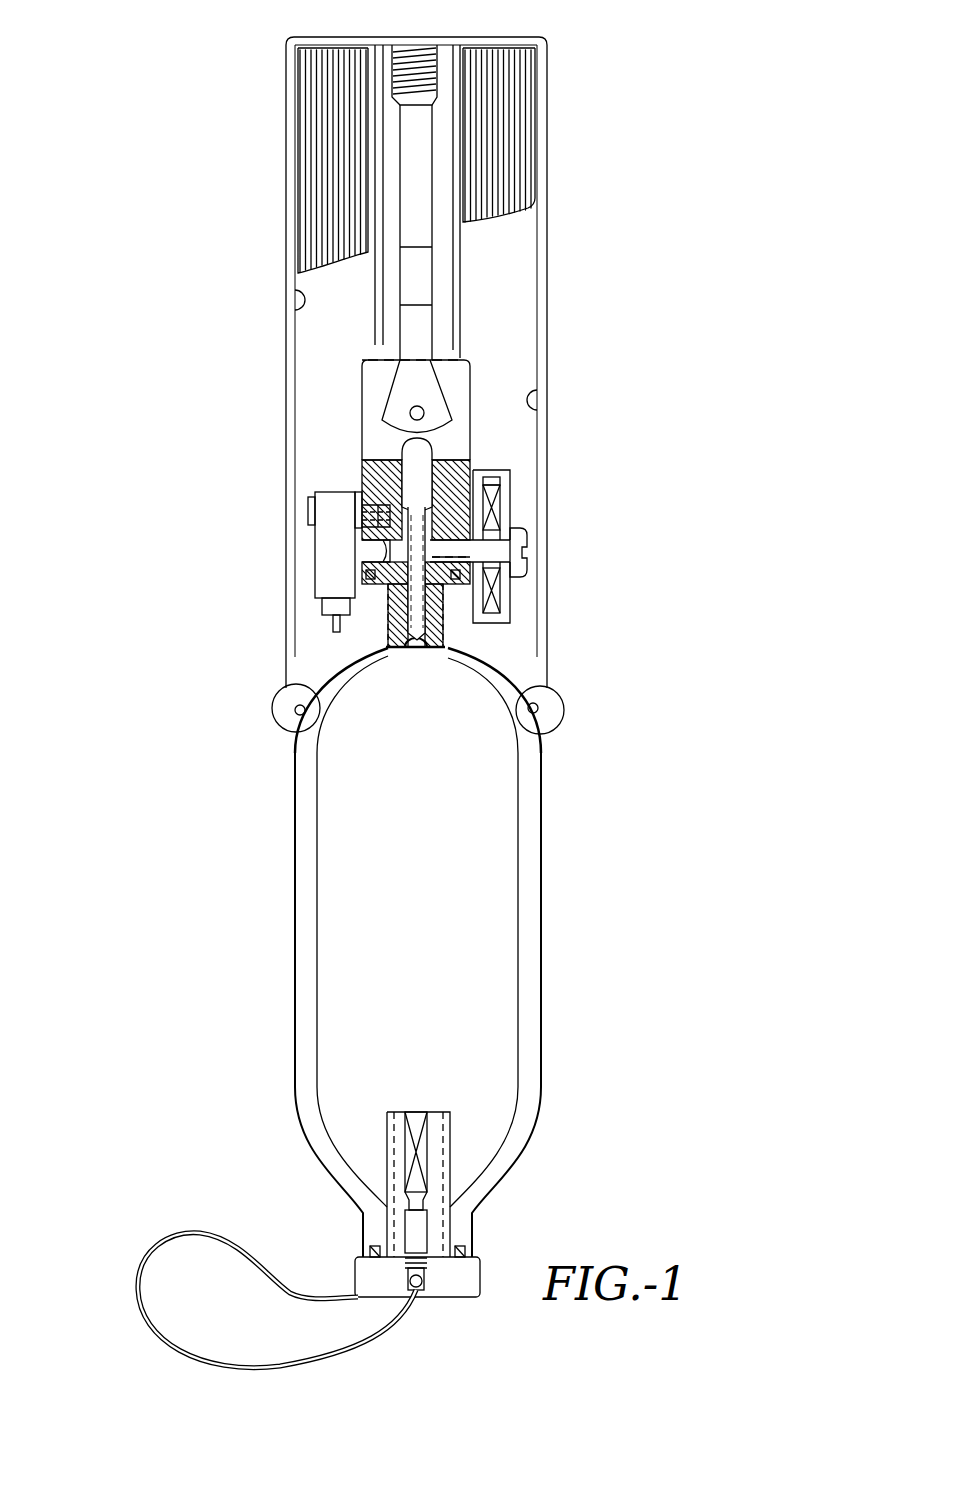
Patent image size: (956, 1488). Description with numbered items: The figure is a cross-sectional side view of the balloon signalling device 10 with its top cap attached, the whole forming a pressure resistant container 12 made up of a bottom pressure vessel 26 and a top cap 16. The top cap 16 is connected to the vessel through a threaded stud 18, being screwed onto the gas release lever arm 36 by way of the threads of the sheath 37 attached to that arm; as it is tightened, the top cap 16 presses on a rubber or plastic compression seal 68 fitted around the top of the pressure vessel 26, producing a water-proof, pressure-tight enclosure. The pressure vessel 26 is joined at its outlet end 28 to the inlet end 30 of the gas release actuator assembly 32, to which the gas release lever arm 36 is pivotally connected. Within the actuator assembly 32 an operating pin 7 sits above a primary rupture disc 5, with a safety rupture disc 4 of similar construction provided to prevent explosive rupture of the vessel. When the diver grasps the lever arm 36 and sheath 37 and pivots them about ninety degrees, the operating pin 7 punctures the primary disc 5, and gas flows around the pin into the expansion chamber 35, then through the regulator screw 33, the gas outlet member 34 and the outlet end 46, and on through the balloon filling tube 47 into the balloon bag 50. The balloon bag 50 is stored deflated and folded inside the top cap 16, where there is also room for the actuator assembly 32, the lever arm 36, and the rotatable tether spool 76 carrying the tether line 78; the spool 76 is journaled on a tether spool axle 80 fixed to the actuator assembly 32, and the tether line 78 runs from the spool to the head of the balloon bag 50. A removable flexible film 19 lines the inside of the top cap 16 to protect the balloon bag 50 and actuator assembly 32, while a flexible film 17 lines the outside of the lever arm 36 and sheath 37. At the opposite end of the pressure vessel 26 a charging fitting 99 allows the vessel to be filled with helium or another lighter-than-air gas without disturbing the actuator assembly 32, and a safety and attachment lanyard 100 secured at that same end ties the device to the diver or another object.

The balloon signalling device 10 is at (585, 100).
The pressure resistant container 12 is at (277, 366).
The top cap 16 is at (538, 363).
The flexible film 17 is at (460, 262).
The threaded stud 18 is at (425, 55).
The removable flexible film 19 is at (302, 303).
The bottom pressure vessel 26 is at (500, 932).
The outlet end 28 is at (458, 628).
The inlet end 30 is at (390, 636).
The gas release actuator assembly 32 is at (360, 464).
The regulator screw 33 is at (318, 505).
The gas outlet member 34 is at (316, 575).
The expansion chamber 35 is at (368, 517).
The gas release lever arm 36 is at (425, 335).
The sheath 37 is at (384, 270).
The safety rupture disc 4 is at (378, 552).
The primary rupture disc 5 is at (408, 652).
The operating pin 7 is at (398, 458).
The outlet end 46 is at (332, 606).
The balloon filling tube 47 is at (333, 625).
The balloon bag 50 is at (503, 62).
The compression seal 68 is at (552, 716).
The tether spool 76 is at (510, 595).
The tether line 78 is at (490, 430).
The tether spool axle 80 is at (525, 556).
The charging fitting 99 is at (366, 1279).
The safety and attachment lanyard 100 is at (137, 1307).